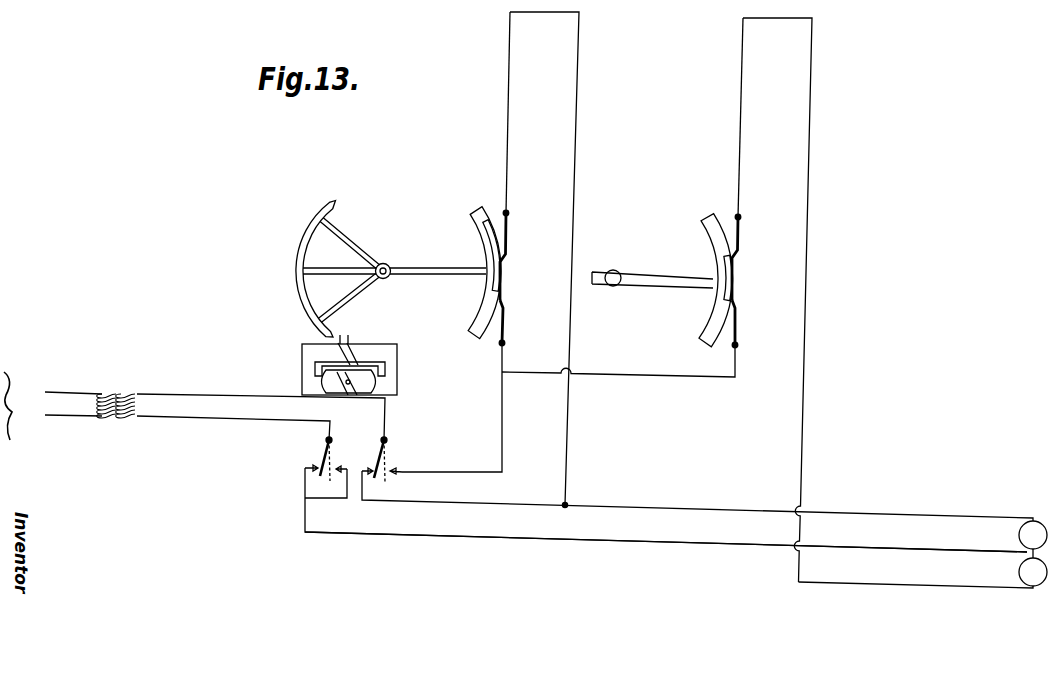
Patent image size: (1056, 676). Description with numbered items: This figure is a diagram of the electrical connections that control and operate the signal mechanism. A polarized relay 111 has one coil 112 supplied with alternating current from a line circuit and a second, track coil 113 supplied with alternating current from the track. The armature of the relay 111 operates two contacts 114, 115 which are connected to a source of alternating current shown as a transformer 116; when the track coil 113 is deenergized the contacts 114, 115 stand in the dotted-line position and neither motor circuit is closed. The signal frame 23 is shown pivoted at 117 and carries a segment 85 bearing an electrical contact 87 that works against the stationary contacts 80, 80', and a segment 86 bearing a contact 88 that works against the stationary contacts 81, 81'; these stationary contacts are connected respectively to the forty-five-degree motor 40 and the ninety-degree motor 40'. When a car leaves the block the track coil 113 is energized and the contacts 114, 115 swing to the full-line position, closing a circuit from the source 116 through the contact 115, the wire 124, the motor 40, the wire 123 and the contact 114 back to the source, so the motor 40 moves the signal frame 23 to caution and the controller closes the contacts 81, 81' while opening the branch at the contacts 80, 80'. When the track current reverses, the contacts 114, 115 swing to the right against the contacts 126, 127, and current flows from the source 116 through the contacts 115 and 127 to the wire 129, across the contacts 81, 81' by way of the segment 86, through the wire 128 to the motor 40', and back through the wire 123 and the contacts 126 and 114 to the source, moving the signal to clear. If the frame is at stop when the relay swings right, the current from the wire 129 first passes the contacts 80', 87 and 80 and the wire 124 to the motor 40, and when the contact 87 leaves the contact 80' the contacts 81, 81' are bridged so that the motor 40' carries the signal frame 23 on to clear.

The signal frame 23 is at (338, 224).
The pivot 117 is at (392, 266).
The segment 85 is at (476, 303).
The electrical contact 87 is at (486, 220).
The stationary contact 80 is at (524, 156).
The stationary contact 80' is at (523, 323).
The segment 86 is at (705, 306).
The contact 88 is at (713, 333).
The stationary contact 81 is at (754, 159).
The stationary contact 81' is at (756, 324).
The wire 129 is at (500, 415).
The polarized relay 111 is at (402, 369).
The coil 112 is at (356, 356).
The track coil 113 is at (382, 398).
The transformer 116 is at (113, 392).
The contact 114 is at (323, 462).
The contact 126 is at (338, 467).
The contact 115 is at (385, 458).
The contact 127 is at (393, 471).
The wire 124 is at (624, 508).
The wire 123 is at (575, 545).
The wire 128 is at (917, 588).
The 45-degree motor 40 is at (1036, 520).
The 90-degree motor 40' is at (1034, 590).